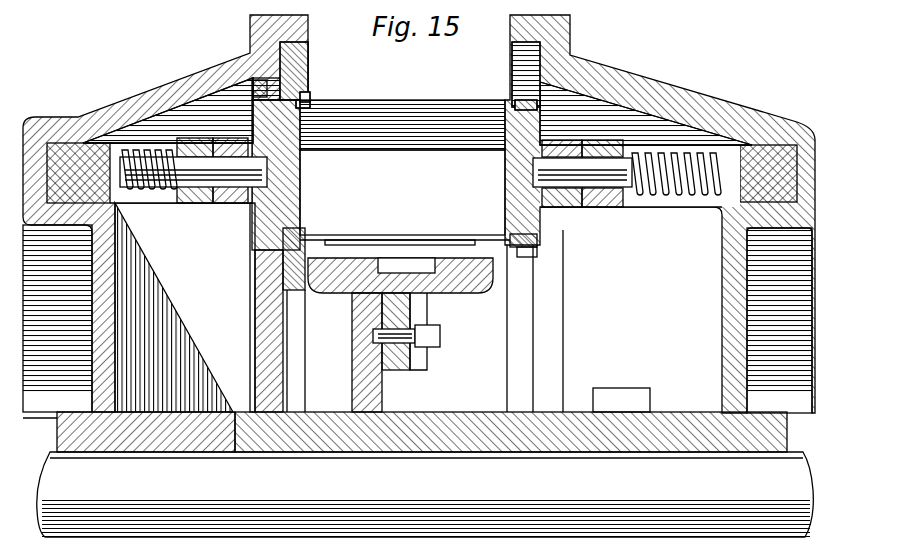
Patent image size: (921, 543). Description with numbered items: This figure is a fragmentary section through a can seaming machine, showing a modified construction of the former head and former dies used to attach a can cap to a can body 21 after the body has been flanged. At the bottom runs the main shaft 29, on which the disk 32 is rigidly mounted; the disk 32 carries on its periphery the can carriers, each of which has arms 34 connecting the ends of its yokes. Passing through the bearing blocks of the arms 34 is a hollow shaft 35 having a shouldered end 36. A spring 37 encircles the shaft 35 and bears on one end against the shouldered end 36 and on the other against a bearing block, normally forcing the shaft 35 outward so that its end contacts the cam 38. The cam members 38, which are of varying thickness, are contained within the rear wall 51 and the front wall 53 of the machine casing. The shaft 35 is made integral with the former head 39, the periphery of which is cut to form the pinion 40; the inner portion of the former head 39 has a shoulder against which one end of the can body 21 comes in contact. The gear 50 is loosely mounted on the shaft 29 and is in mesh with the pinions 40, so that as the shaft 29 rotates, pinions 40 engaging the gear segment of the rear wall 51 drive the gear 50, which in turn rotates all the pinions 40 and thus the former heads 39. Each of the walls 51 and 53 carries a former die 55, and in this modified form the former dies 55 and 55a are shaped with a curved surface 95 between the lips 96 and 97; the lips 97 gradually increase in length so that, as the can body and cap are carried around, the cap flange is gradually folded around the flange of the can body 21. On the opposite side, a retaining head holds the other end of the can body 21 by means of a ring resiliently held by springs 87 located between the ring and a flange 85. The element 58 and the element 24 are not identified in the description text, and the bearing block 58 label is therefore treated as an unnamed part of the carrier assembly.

The shaft 29 is at (425, 494).
The rear wall 51 is at (143, 97).
The front wall 53 is at (705, 104).
The shouldered end 36 is at (117, 127).
The lip 96 is at (255, 78).
The former die 55 is at (303, 63).
The curved surface 95 is at (312, 82).
The lip 97 is at (310, 97).
The cam 38 is at (60, 140).
The bearing block 58 is at (218, 203).
The arm 34 is at (180, 207).
The former head 39 is at (300, 158).
The hollow shaft 35 is at (210, 163).
The spring 37 is at (145, 190).
The can body 21 is at (428, 112).
The chamber 24 is at (300, 186).
The former die 55a is at (293, 293).
The disk 32 is at (383, 388).
The pinion 40 is at (257, 245).
The gear 50 is at (275, 366).
The flange 85 is at (523, 242).
The spring 87 is at (528, 260).